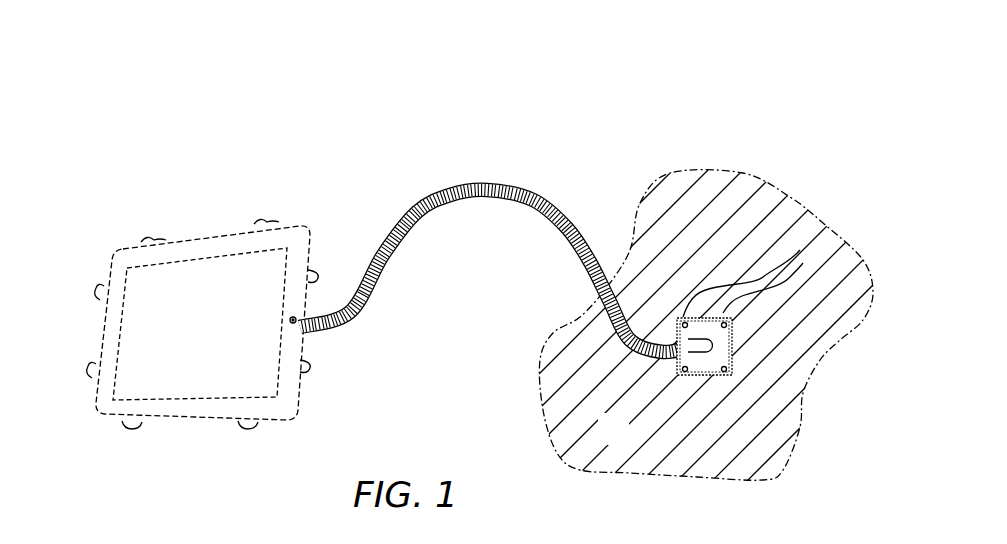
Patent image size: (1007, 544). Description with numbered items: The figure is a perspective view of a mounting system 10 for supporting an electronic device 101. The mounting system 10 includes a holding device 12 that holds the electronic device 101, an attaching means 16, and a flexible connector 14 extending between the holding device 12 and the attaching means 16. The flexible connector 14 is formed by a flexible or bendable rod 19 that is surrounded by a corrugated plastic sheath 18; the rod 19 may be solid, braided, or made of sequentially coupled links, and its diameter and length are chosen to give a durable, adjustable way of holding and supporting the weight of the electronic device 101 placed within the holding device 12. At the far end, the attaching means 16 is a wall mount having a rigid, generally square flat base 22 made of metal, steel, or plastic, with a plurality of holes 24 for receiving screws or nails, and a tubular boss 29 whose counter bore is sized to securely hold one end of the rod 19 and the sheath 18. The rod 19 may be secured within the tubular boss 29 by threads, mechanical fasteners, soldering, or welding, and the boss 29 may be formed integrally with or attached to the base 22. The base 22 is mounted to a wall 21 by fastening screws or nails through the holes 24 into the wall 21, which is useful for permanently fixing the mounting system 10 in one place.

The mounting system 10 is at (168, 116).
The holding device 12 is at (205, 447).
The electronic device 101 is at (195, 288).
The flexible connector 14 is at (498, 167).
The attaching means 16 is at (715, 250).
The corrugated plastic sheath 18 is at (413, 235).
The flexible rod 19 is at (427, 207).
The wall 21 is at (627, 442).
The base 22 is at (702, 365).
The holes 24 is at (800, 250).
The tubular boss 29 is at (728, 350).